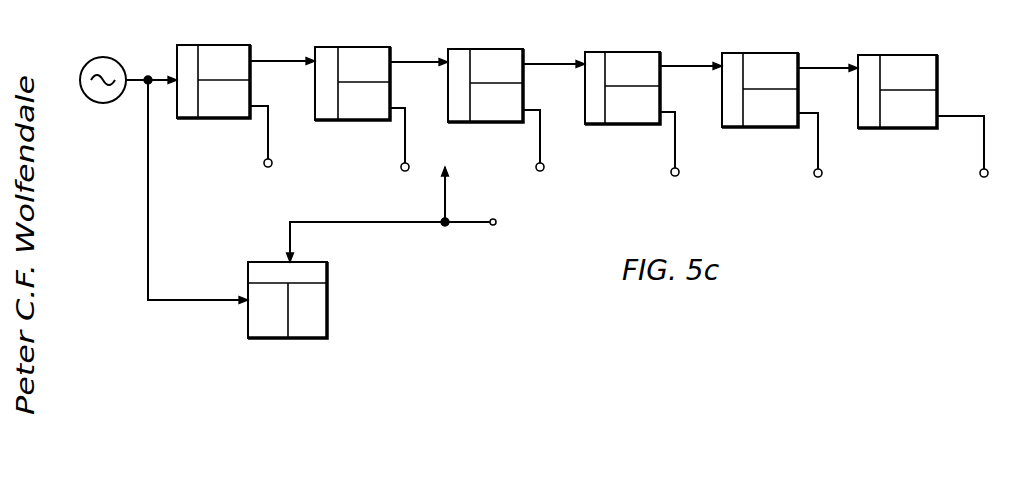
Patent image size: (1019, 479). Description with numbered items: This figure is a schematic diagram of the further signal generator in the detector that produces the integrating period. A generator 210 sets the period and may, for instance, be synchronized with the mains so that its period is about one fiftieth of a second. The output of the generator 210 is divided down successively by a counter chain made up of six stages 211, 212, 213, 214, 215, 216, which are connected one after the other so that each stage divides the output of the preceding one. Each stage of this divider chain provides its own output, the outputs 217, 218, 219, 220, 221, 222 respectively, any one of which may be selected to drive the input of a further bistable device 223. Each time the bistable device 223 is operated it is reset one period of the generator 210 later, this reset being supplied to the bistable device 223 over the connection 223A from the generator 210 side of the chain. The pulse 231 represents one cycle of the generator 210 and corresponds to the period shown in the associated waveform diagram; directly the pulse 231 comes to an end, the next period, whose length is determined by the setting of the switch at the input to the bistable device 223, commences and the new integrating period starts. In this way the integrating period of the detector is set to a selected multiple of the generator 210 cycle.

The generator 210 is at (103, 56).
The counter chain stage 211 is at (217, 53).
The counter chain stage 212 is at (357, 53).
The counter chain stage 213 is at (487, 57).
The counter chain stage 214 is at (629, 57).
The counter chain stage 215 is at (762, 60).
The counter chain stage 216 is at (897, 62).
The divider chain output 217 is at (263, 163).
The divider chain output 218 is at (400, 167).
The divider chain output 219 is at (533, 168).
The divider chain output 220 is at (668, 172).
The divider chain output 221 is at (813, 173).
The divider chain output 222 is at (980, 174).
The bistable device 223 is at (327, 292).
The control line 223A is at (443, 198).
The period 231 is at (471, 237).